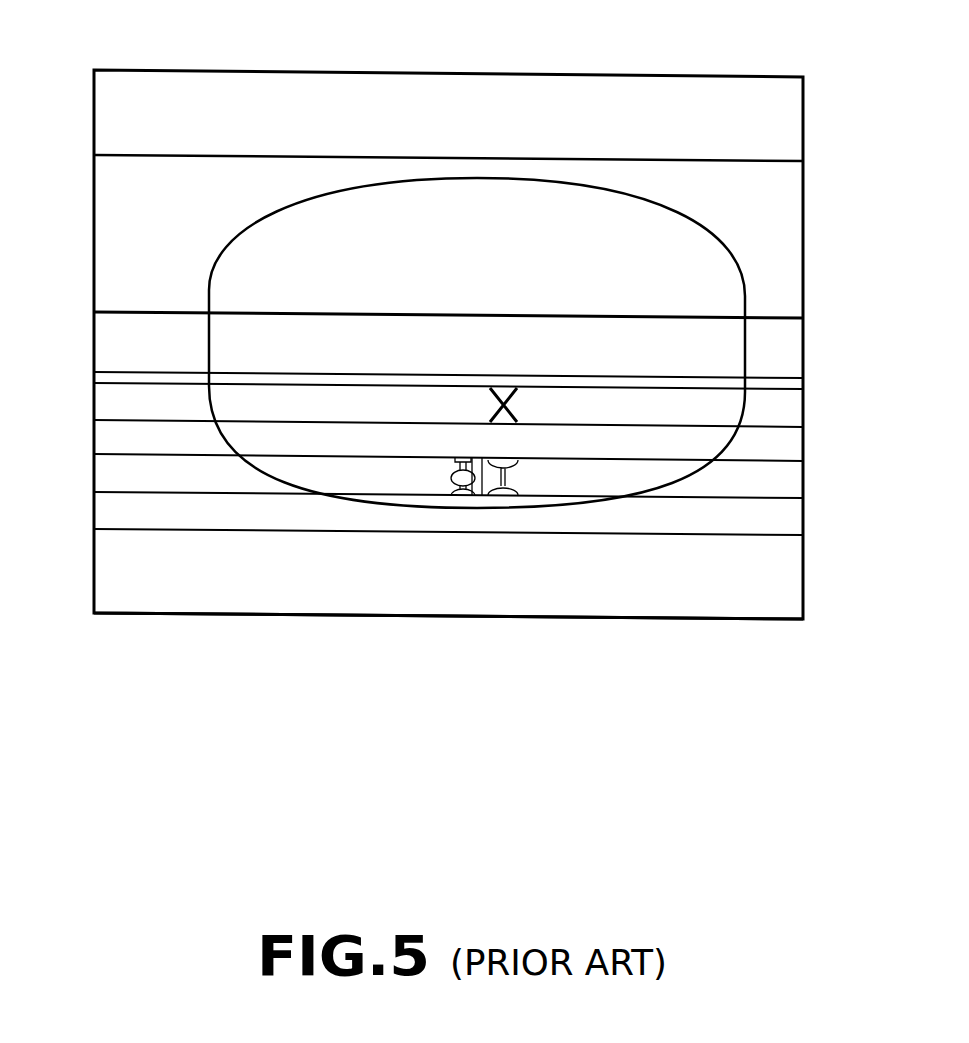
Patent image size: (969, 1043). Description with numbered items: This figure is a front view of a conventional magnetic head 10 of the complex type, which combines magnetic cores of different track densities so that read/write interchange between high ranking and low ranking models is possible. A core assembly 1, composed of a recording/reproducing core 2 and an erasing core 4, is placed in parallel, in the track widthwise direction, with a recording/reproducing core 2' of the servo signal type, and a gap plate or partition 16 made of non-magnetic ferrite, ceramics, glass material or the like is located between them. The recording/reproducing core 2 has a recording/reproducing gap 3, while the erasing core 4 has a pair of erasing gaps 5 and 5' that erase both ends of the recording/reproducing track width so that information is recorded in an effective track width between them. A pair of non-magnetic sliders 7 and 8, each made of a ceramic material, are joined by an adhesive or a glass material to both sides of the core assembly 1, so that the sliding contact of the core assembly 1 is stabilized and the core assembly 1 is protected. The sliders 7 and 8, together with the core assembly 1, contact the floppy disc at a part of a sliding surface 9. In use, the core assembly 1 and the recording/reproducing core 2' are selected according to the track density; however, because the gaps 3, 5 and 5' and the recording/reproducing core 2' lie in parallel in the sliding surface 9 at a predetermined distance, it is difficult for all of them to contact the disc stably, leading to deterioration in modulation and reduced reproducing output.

The core assembly 1 is at (805, 488).
The recording/reproducing core 2 is at (478, 531).
The recording/reproducing core of the servo signal type 2' is at (482, 371).
The recording/reproducing gap 3 is at (502, 388).
The erasing core 4 is at (105, 472).
The erasing gap 5 is at (439, 524).
The erasing gap 5' is at (400, 518).
The non-magnetic slider 7 is at (450, 605).
The non-magnetic slider 8 is at (485, 85).
The sliding surface 9 is at (730, 301).
The magnetic head 10 is at (643, 621).
The gap plate or partition 16 is at (783, 447).